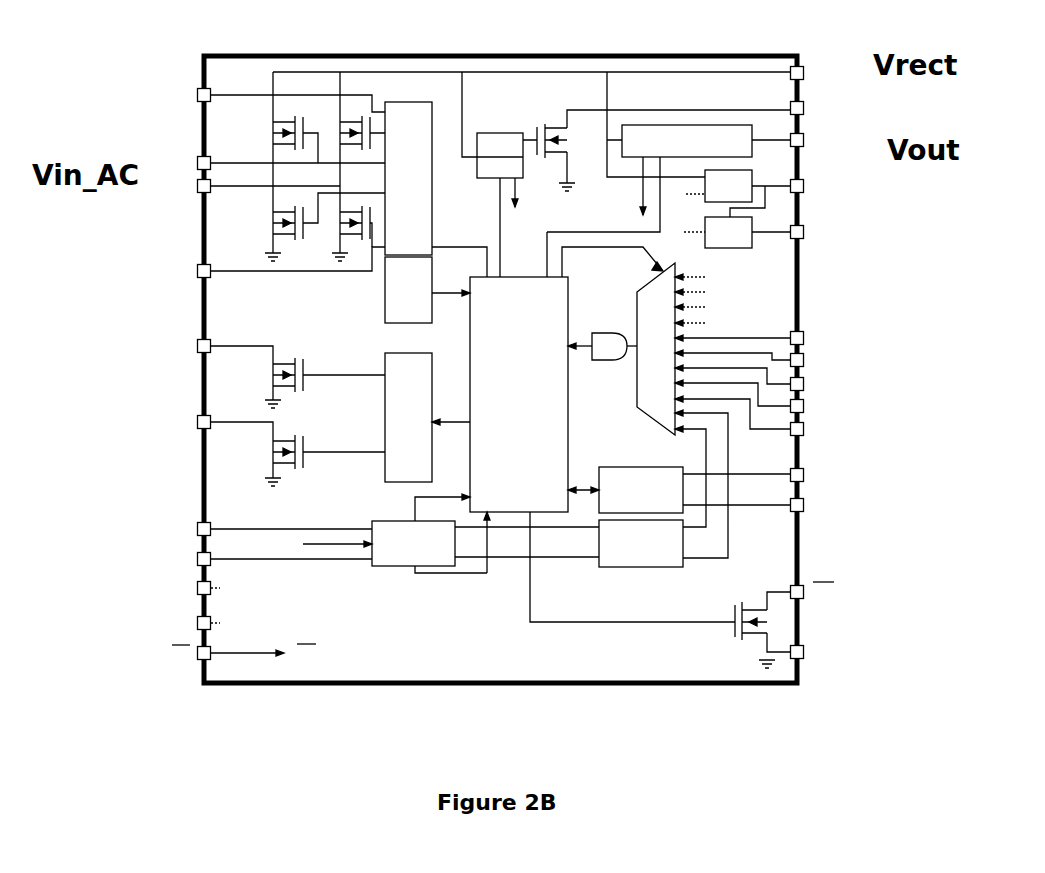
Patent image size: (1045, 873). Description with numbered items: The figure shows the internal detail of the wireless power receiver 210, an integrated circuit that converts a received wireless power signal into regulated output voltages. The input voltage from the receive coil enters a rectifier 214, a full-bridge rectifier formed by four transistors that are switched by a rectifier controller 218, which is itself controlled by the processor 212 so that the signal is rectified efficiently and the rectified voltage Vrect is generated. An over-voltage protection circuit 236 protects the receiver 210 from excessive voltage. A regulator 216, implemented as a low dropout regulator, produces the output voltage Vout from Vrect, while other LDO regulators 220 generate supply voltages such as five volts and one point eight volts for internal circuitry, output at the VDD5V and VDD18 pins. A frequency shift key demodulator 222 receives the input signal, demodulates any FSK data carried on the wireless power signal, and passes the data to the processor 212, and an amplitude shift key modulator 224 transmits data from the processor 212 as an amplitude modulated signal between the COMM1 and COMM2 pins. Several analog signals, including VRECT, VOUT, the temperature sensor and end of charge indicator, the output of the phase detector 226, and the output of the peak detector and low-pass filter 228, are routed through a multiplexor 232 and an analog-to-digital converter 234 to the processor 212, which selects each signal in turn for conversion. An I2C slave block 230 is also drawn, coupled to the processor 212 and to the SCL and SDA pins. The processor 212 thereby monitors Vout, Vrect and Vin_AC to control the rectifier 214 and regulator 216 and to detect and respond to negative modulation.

The receiver 210 is at (667, 55).
The processor 212 is at (602, 400).
The rectifier 214 is at (325, 170).
The regulator 216 is at (668, 152).
The rectifier controller 218 is at (424, 172).
The LDO regulators 220 is at (730, 200).
The frequency shift key demodulator 222 is at (392, 279).
The amplitude shift key modulator 224 is at (358, 422).
The phase detector 226 is at (386, 567).
The peak detector and low-pass filter 228 is at (625, 567).
The I2C slave 230 is at (622, 468).
The multiplexor 232 is at (640, 356).
The analog-to-digital converter 234 is at (603, 333).
The over-voltage protection circuit 236 is at (492, 133).